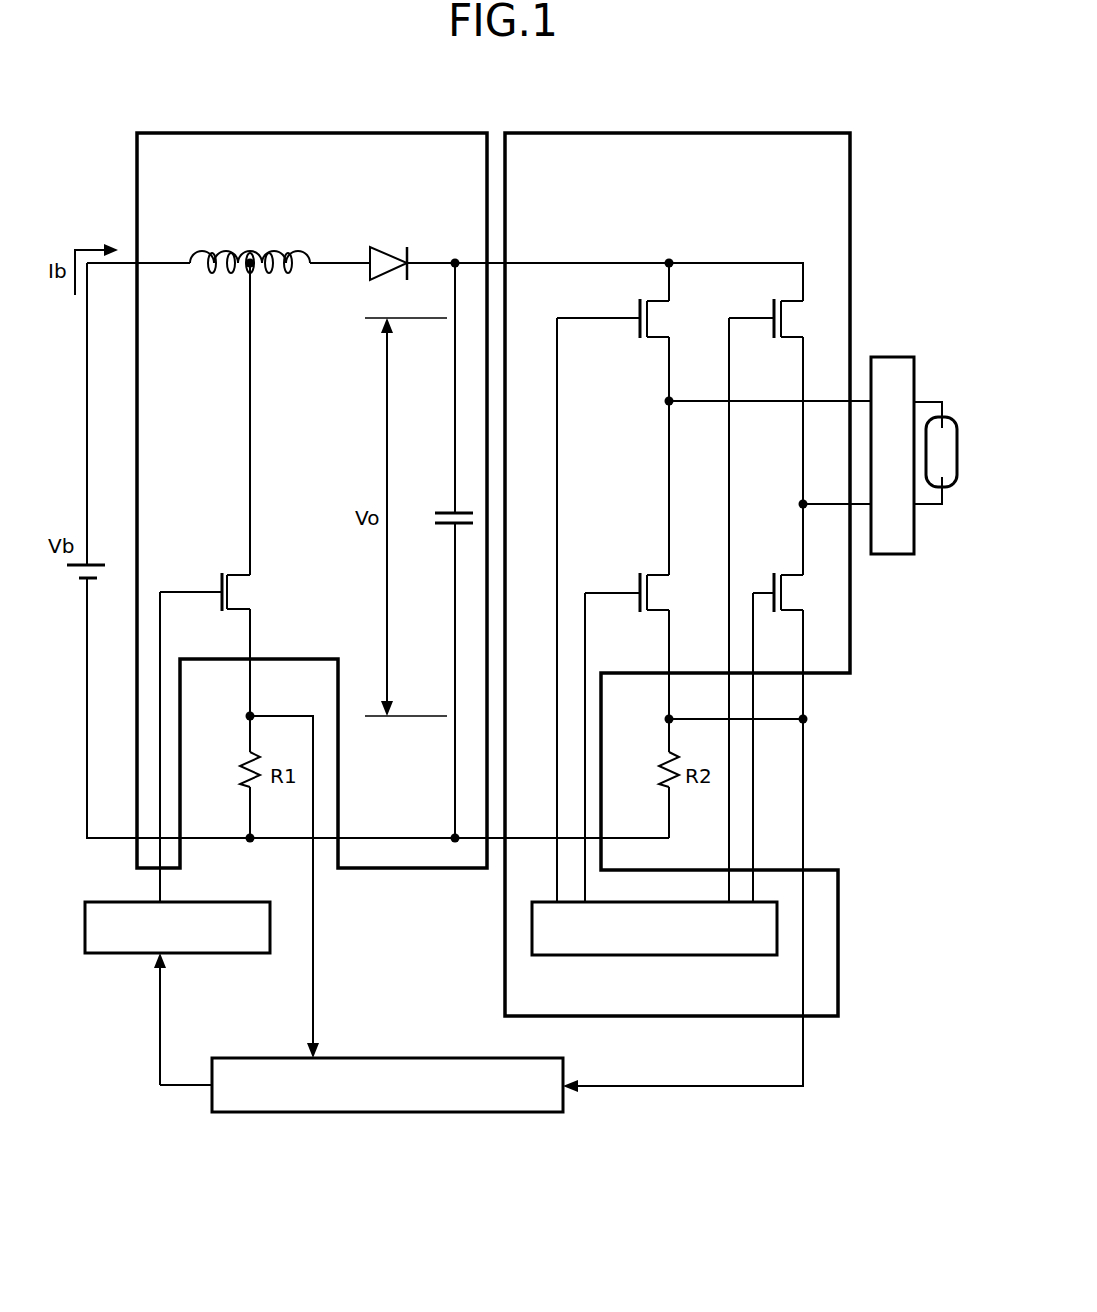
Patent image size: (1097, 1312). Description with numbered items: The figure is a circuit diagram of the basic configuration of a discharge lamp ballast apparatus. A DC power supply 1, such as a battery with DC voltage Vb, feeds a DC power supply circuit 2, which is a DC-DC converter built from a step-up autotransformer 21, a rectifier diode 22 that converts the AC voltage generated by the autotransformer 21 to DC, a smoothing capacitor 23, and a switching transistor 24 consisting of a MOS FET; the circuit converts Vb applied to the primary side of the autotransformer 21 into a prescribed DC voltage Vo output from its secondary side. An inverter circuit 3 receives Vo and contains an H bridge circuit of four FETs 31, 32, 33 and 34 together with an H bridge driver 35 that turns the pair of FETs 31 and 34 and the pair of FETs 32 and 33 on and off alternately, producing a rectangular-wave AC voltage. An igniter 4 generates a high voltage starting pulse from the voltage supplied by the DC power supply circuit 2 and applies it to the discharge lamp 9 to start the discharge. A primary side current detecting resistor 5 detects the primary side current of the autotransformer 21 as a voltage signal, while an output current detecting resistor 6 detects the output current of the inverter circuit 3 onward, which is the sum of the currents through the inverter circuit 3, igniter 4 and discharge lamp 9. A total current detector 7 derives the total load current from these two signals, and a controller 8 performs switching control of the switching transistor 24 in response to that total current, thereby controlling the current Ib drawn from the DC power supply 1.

The DC power supply 1 is at (69, 586).
The DC power supply circuit 2 is at (337, 128).
The inverter circuit 3 is at (701, 128).
The igniter 4 is at (895, 354).
The primary side current detecting resistor 5 is at (229, 766).
The output current detecting resistor 6 is at (649, 766).
The total current detector 7 is at (377, 1056).
The controller 8 is at (79, 928).
The discharge lamp 9 is at (947, 415).
The step-up autotransformer 21 is at (262, 243).
The rectifier diode 22 is at (386, 243).
The smoothing capacitor 23 is at (447, 509).
The switching transistor 24 is at (254, 594).
The FET 31 is at (671, 312).
The FET 32 is at (798, 315).
The FET 33 is at (671, 587).
The FET 34 is at (801, 589).
The H bridge driver 35 is at (672, 957).